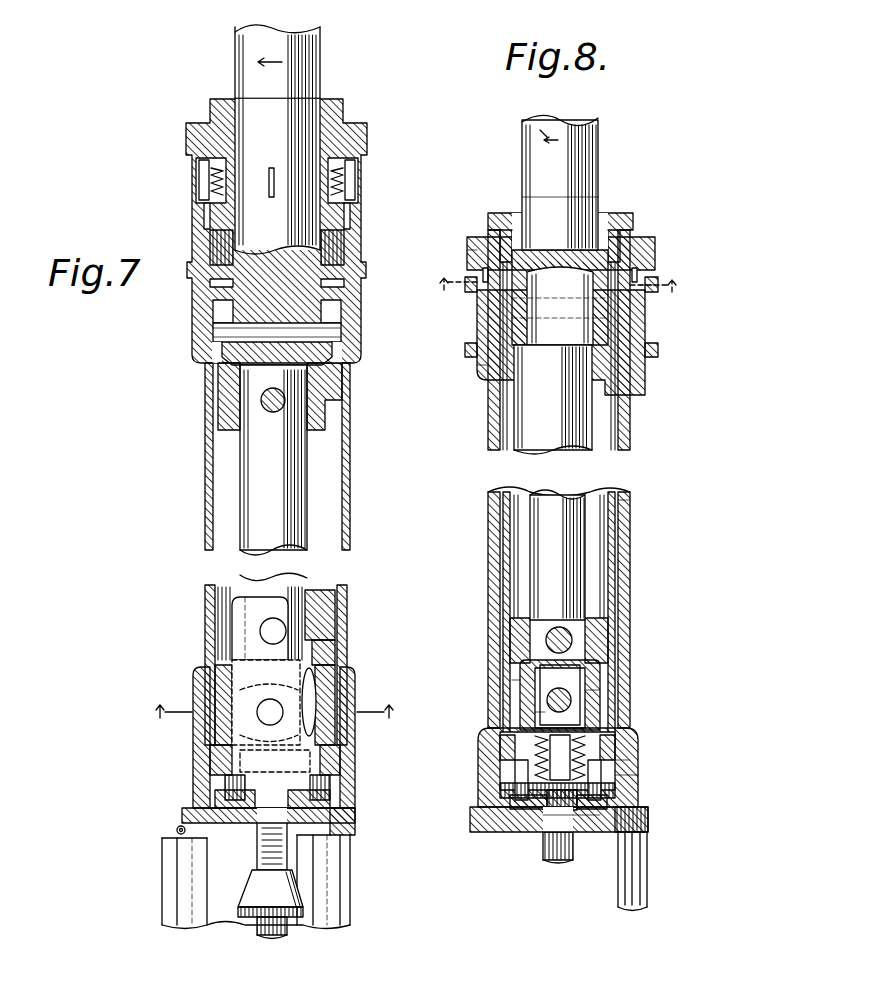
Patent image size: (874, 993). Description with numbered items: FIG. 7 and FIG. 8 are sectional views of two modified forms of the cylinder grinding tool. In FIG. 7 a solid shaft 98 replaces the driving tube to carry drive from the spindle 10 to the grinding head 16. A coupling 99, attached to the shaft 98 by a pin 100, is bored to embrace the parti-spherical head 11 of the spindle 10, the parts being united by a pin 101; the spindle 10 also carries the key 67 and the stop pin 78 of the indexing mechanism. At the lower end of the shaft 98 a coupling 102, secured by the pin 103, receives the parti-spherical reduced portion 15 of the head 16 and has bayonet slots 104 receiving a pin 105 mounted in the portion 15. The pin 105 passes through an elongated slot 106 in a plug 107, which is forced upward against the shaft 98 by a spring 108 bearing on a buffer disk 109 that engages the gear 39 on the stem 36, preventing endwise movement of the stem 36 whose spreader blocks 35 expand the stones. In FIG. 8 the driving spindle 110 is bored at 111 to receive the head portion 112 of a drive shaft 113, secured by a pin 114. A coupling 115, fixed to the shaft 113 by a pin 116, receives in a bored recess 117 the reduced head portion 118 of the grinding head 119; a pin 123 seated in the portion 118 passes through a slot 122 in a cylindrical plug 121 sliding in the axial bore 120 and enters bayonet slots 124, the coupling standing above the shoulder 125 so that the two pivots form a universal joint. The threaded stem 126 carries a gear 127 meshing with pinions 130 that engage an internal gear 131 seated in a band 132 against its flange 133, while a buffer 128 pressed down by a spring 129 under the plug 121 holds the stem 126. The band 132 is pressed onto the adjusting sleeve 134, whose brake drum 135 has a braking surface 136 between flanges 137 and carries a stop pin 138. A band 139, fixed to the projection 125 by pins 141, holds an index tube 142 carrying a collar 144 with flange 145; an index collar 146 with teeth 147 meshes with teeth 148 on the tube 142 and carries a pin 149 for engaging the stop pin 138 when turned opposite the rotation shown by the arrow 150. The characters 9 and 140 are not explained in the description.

In FIG. 7, the spindle 10 is at (236, 46).
In FIG. 8, the spindle 10 is at (566, 289).
In FIG. 7, the key 67 is at (269, 182).
In FIG. 7, the stop pin 78 is at (190, 212).
In FIG. 7, the parti-spherical head 11 is at (232, 356).
In FIG. 7, the pin 101 is at (222, 330).
In FIG. 7, the coupling 99 is at (236, 398).
In FIG. 7, the pin 100 is at (262, 405).
In FIG. 7, the solid shaft 98 is at (248, 455).
In FIG. 7, the coupling 102 is at (240, 620).
In FIG. 7, the pin 103 is at (262, 634).
In FIG. 7, the elongated slot 106 is at (215, 680).
In FIG. 7, the section line 9 is at (273, 702).
In FIG. 7, the bayonet slots 104 is at (255, 717).
In FIG. 7, the pin 105 is at (232, 738).
In FIG. 7, the plug 107 is at (318, 650).
In FIG. 7, the parti-spherical reduced portion 15 is at (318, 676).
In FIG. 7, the spring 108 is at (350, 757).
In FIG. 7, the buffer disk 109 is at (350, 782).
In FIG. 7, the grinding head 16 is at (172, 821).
In FIG. 7, the gear 39 is at (262, 826).
In FIG. 7, the spreader blocks 35 is at (300, 898).
In FIG. 7, the stem 36 is at (272, 936).
In FIG. 8, the arrow 150 is at (540, 130).
In FIG. 8, the driving spindle 110 is at (600, 127).
In FIG. 8, the collar 144 is at (633, 215).
In FIG. 8, the annular flange 145 is at (640, 222).
In FIG. 8, the bore 111 is at (650, 248).
In FIG. 8, the index collar 146 is at (655, 262).
In FIG. 8, the serrations or teeth 147 is at (470, 250).
In FIG. 8, the stop pin 138 is at (482, 272).
In FIG. 8, the serrations or teeth 148 is at (640, 273).
In FIG. 8, the pin 149 is at (690, 285).
In FIG. 8, the annular flanges 137 is at (468, 292).
In FIG. 8, the annular braking surface 136 is at (478, 330).
In FIG. 8, the parti-spherical upper head portion 112 is at (560, 297).
In FIG. 8, the pin 114 is at (640, 318).
In FIG. 8, the drive shaft 113 is at (635, 335).
In FIG. 8, the brake drum 135 is at (478, 368).
In FIG. 8, the coupling 115 is at (630, 418).
In FIG. 8, the index tube 142 is at (504, 508).
In FIG. 8, the adjusting sleeve 134 is at (632, 510).
In FIG. 8, the pin 116 is at (600, 615).
In FIG. 8, the cylindrical plug 121 is at (520, 675).
In FIG. 8, the bored recess 117 is at (600, 660).
In FIG. 8, the elongated slot 122 is at (590, 680).
In FIG. 8, the pin 123 is at (537, 710).
In FIG. 8, the parti-spherical reduced head portion 118 is at (605, 700).
In FIG. 8, the bayonet slots 124 is at (590, 705).
In FIG. 8, the laterally extending shoulder 125 is at (505, 738).
In FIG. 8, the bore 120 is at (640, 740).
In FIG. 8, the pins 141 is at (545, 750).
In FIG. 8, the band 139 is at (625, 760).
In FIG. 8, the spring 129 is at (540, 765).
In FIG. 8, the annular flange 133 is at (640, 775).
In FIG. 8, the pinions 130 is at (640, 790).
In FIG. 8, the internal gear 131 is at (500, 790).
In FIG. 8, the band 132 is at (640, 802).
In FIG. 8, the buffer 128 is at (548, 800).
In FIG. 8, the gear 127 is at (550, 816).
In FIG. 8, the threaded stem 126 is at (553, 858).
In FIG. 8, the opening 140 is at (598, 820).
In FIG. 8, the grinding head 119 is at (658, 835).